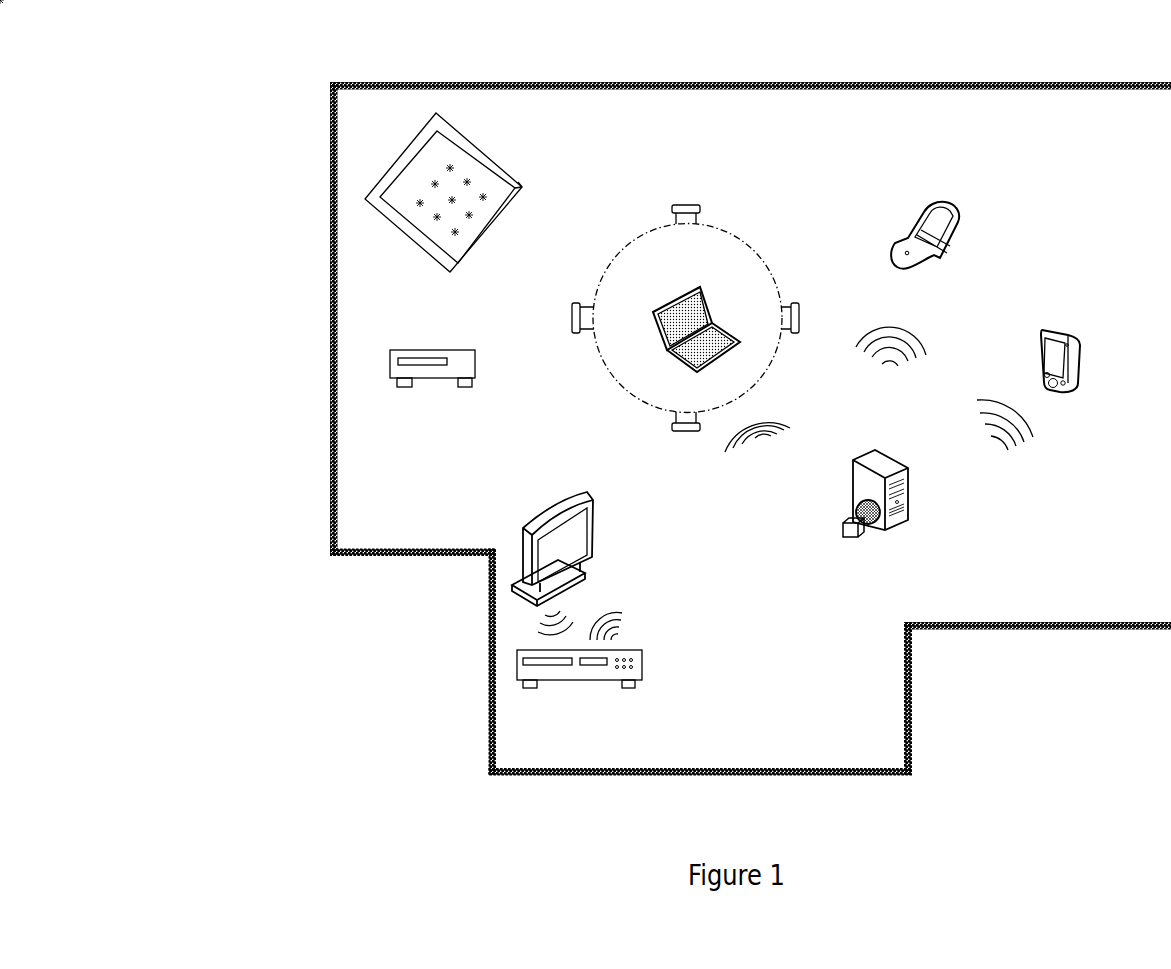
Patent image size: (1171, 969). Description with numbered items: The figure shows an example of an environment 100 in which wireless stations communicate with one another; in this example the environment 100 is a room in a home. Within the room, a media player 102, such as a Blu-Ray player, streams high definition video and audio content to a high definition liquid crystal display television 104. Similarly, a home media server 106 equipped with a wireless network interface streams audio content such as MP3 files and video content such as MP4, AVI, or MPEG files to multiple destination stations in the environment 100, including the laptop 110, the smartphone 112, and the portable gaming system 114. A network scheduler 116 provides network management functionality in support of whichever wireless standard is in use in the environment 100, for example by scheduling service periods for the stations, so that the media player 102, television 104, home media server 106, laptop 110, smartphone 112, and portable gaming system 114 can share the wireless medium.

The environment 100 is at (189, 74).
The media player 102 is at (640, 645).
The high definition liquid crystal display television 104 is at (580, 533).
The home media server 106 is at (890, 470).
The laptop 110 is at (712, 303).
The smartphone 112 is at (958, 215).
The portable gaming system 114 is at (1062, 323).
The network scheduler 116 is at (453, 350).